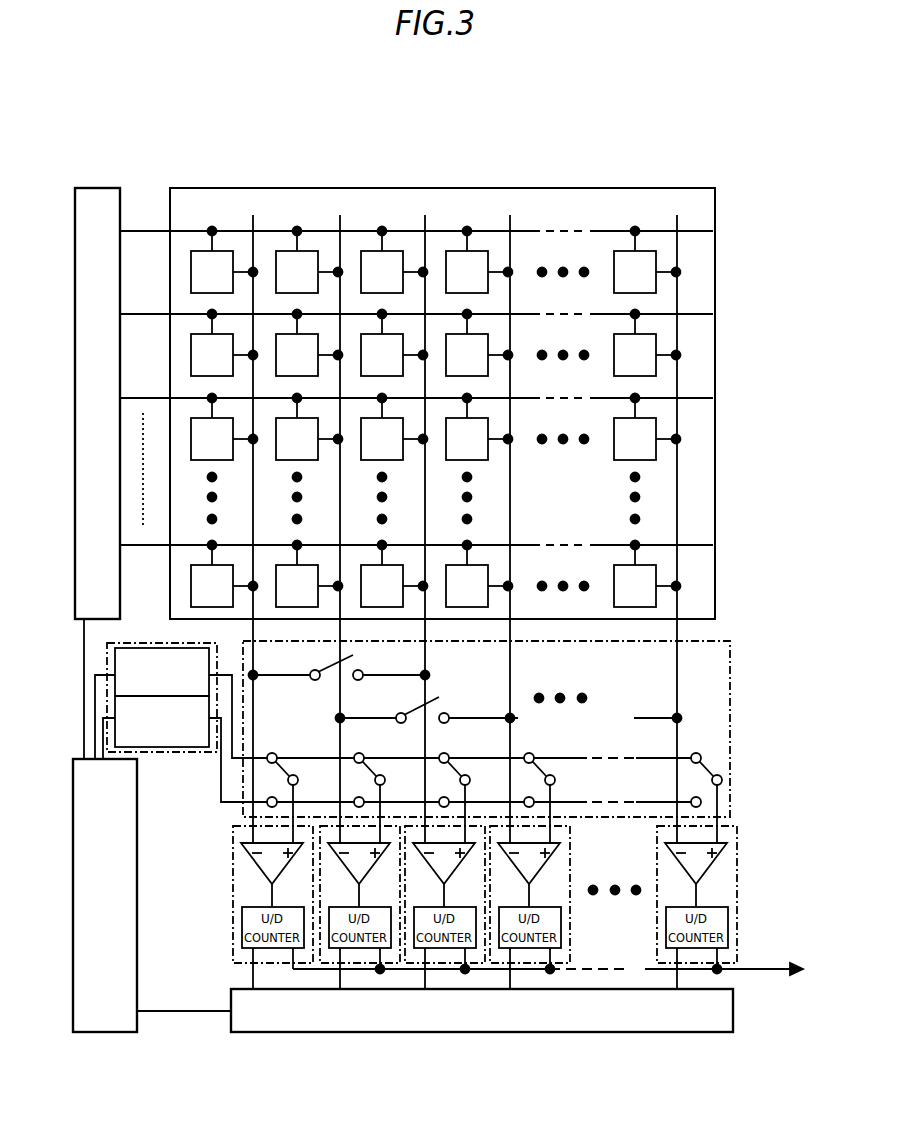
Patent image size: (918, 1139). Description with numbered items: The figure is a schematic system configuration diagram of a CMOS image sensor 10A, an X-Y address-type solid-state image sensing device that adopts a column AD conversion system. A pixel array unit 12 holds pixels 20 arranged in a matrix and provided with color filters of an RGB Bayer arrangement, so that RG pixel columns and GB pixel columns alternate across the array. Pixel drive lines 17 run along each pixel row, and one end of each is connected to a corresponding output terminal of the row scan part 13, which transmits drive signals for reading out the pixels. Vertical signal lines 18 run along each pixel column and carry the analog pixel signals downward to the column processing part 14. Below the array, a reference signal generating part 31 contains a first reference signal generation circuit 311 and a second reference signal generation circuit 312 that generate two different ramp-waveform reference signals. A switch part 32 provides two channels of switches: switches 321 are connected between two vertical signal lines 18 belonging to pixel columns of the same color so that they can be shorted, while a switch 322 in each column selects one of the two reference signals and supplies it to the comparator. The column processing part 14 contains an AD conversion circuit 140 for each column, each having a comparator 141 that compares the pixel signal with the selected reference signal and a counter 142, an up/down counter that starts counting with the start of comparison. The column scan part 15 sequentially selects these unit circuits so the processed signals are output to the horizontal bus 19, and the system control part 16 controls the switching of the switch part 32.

The CMOS image sensor 10A is at (529, 130).
The pixel array unit 12 is at (377, 188).
The row scan part 13 is at (96, 188).
The column processing part 14 is at (178, 926).
The column scan part 15 is at (482, 1032).
The system control part 16 is at (107, 1032).
The pixel drive line 17 is at (144, 228).
The vertical signal line 18 is at (512, 663).
The horizontal bus 19 is at (768, 968).
The pixel 20 is at (613, 460).
The reference signal generating part 31 is at (181, 706).
The switch part 32 is at (730, 641).
The AD conversion circuit 140 is at (573, 905).
The comparator 141 is at (737, 831).
The counter 142 is at (728, 910).
The reference signal 1 generation circuit 311 is at (136, 648).
The reference signal 2 generation circuit 312 is at (170, 752).
The switch 321 is at (355, 670).
The switch 322 is at (285, 760).